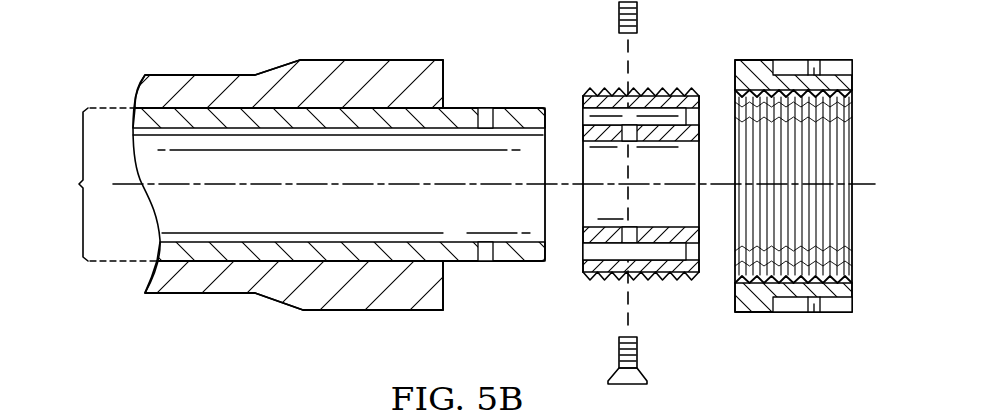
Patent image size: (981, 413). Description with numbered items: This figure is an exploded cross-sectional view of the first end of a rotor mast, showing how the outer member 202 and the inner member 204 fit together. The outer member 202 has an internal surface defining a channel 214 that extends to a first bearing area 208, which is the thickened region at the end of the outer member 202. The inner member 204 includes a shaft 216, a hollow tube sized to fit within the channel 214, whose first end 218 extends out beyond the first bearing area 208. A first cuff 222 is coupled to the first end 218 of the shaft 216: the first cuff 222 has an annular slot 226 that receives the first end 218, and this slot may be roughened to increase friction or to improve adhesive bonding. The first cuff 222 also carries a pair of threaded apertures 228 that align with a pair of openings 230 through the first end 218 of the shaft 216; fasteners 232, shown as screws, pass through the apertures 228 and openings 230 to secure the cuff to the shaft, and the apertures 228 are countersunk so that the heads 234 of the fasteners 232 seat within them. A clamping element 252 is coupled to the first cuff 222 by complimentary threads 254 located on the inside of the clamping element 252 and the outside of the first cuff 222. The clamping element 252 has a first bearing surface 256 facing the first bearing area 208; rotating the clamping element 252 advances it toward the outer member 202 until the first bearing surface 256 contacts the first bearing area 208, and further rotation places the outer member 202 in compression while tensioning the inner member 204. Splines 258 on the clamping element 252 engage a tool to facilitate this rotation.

The outer member 202 is at (200, 75).
The inner member 204 is at (532, 107).
The first bearing area 208 is at (443, 70).
The channel 214 is at (94, 184).
The shaft 216 is at (162, 232).
The first end 218 is at (458, 252).
The first cuff 222 is at (700, 257).
The annular slot 226 is at (592, 252).
The threaded apertures 228 is at (630, 127).
The openings 230 is at (491, 116).
The fasteners 232 is at (618, 13).
The heads 234 is at (607, 373).
The clamping element 252 is at (835, 60).
The complimentary threads 254 is at (673, 87).
The first bearing surface 256 is at (735, 68).
The splines 258 is at (803, 408).